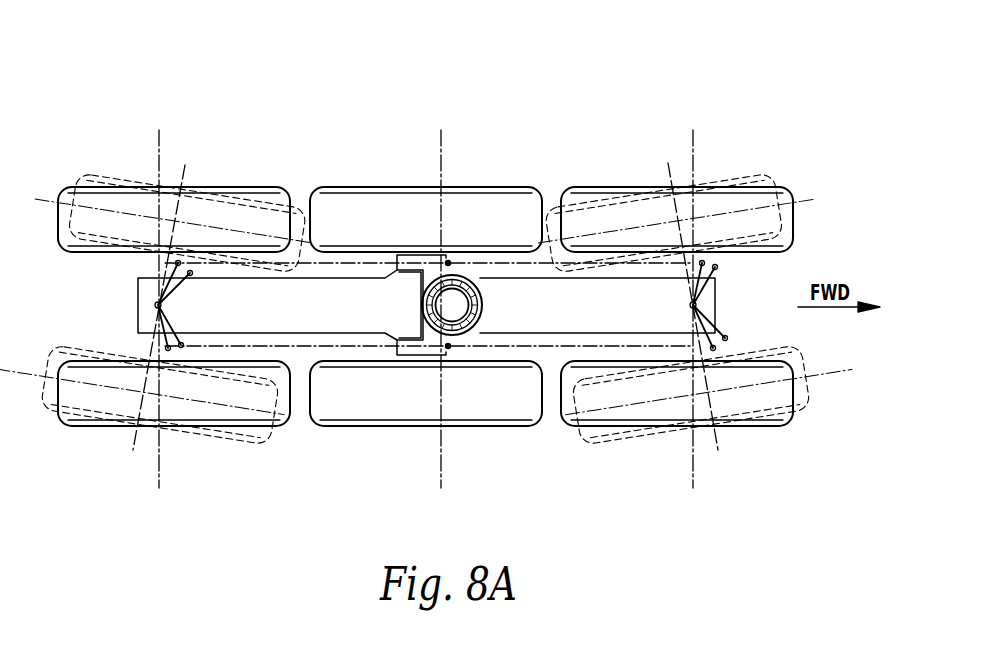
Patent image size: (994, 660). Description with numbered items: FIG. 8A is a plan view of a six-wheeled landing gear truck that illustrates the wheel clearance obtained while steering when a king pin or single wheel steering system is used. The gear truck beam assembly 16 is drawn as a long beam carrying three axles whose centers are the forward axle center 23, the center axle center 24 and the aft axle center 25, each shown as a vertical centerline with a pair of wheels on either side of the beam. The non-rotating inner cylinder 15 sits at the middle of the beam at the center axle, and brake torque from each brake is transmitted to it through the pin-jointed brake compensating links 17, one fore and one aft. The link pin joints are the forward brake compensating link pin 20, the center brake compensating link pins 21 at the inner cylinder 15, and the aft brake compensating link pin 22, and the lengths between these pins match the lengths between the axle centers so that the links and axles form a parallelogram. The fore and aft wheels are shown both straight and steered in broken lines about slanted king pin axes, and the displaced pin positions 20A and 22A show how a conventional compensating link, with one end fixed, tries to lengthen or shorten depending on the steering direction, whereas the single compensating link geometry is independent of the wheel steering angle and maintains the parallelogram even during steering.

The inner cylinder 15 is at (480, 317).
The gear truck beam assembly 16 is at (295, 308).
The brake compensating link 17 is at (365, 262).
The brake compensating link pins (forward) 20 is at (703, 258).
The forward brake compensating link pin position while steering 20A is at (718, 267).
The brake compensating link pins (center) 21 is at (448, 263).
The brake compensating link pins (aft) 22 is at (180, 261).
The aft brake compensating link pin position while steering 22A is at (192, 272).
The axle centers (forward) 23 is at (699, 144).
The axle centers (center) 24 is at (445, 151).
The axle centers (aft) 25 is at (156, 146).